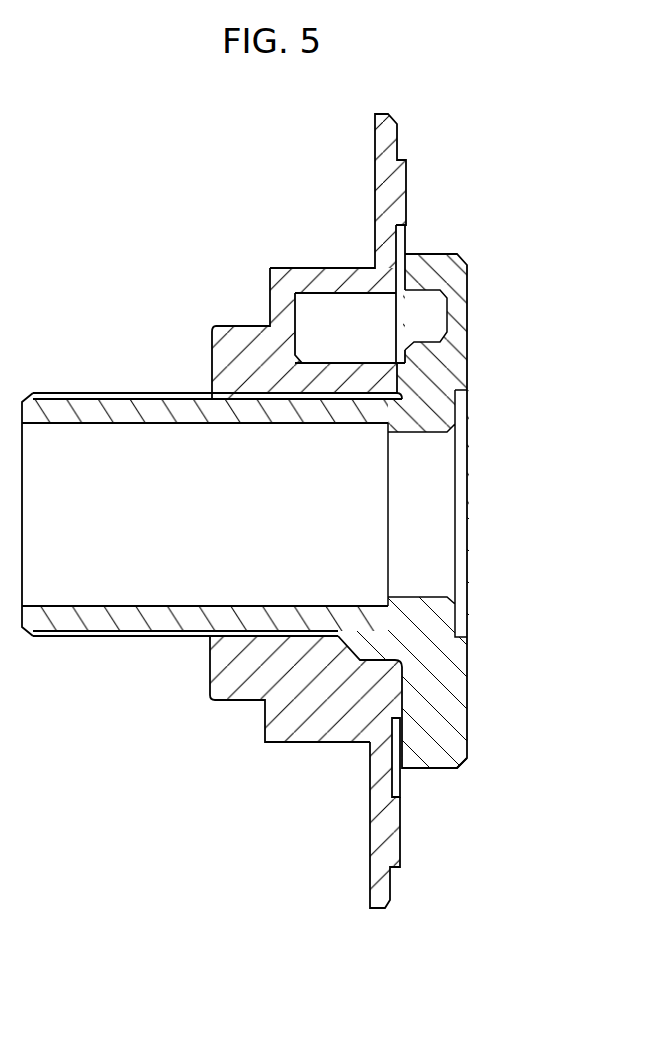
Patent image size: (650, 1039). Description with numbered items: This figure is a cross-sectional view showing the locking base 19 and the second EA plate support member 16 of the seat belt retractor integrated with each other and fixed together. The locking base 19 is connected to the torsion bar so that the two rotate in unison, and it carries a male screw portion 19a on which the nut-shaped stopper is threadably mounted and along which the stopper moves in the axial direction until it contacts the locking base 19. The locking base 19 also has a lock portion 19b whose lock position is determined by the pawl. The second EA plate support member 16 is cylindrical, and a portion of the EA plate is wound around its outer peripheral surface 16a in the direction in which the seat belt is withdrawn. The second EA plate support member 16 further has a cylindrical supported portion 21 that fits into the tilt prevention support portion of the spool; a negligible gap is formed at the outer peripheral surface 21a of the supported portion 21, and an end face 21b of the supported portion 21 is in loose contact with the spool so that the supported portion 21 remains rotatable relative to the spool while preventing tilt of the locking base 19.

The second EA plate support member 16 is at (298, 268).
The outer peripheral surface 16a is at (322, 743).
The locking base 19 is at (463, 666).
The male screw portion 19a is at (113, 640).
The lock portion 19b is at (442, 769).
The supported portion 21 is at (237, 326).
The outer peripheral surface 21a is at (227, 702).
The end face 21b is at (210, 683).